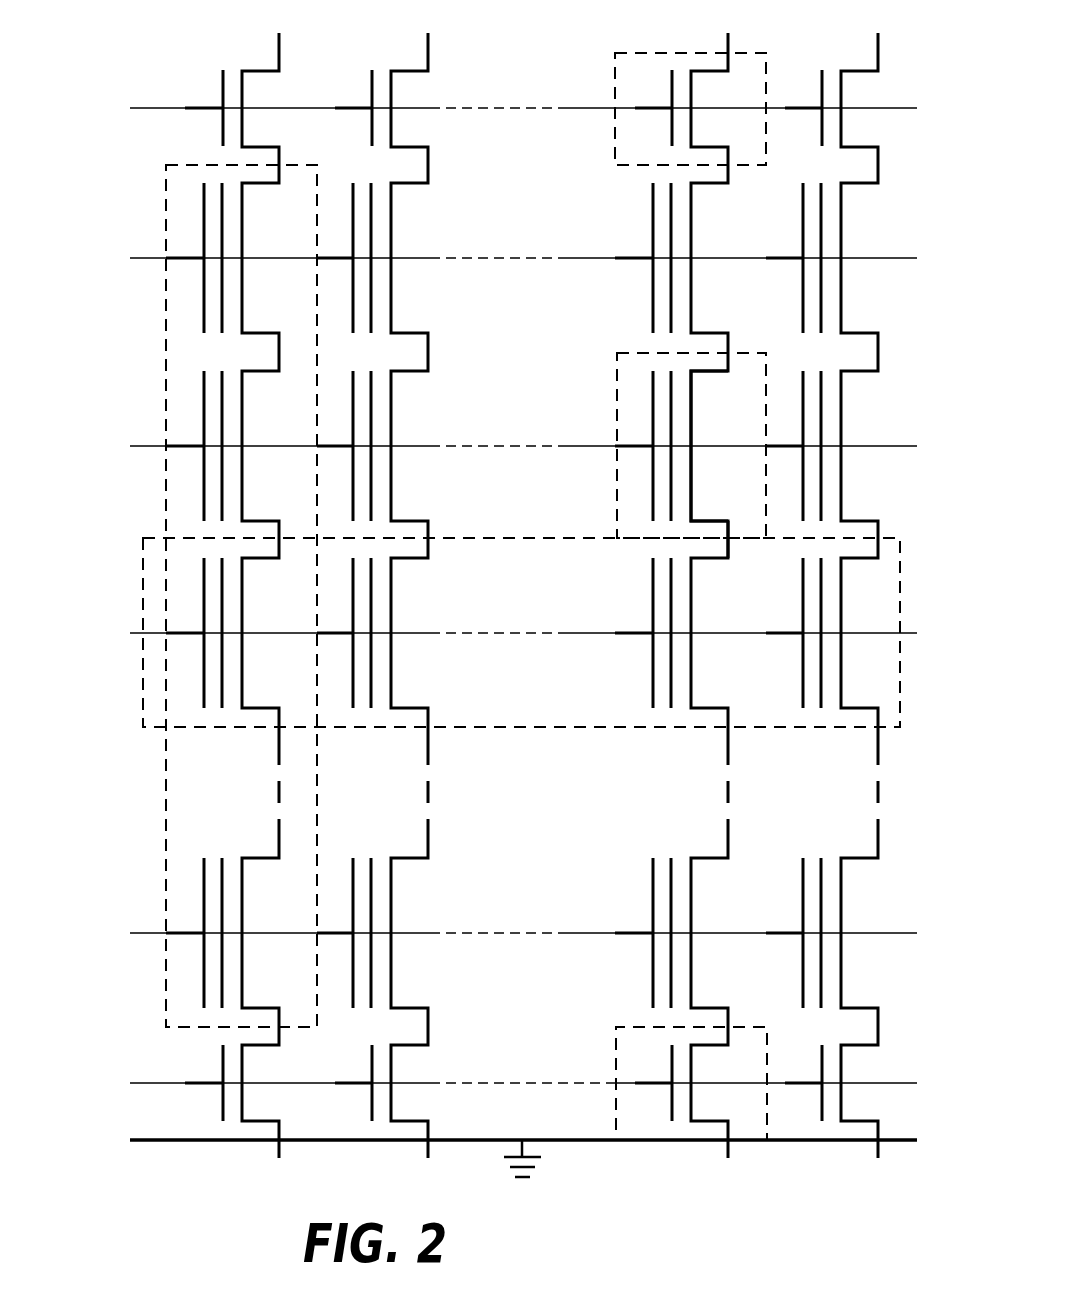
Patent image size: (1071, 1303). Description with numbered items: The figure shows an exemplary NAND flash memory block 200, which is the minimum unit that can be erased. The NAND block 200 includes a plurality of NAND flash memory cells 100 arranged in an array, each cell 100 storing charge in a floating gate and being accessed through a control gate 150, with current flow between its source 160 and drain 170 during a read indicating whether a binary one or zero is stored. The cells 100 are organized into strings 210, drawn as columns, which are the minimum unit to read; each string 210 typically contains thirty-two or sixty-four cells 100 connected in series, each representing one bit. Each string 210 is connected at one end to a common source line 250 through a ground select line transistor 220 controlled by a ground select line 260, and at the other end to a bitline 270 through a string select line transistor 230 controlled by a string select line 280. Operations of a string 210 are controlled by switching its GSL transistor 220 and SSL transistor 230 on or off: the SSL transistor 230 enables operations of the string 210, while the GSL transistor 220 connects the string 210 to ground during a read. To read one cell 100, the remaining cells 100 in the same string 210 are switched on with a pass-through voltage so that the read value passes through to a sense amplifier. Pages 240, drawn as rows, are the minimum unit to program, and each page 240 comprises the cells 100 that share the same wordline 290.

The NAND flash memory block 200 is at (134, 56).
The bitline 270 is at (280, 40).
The string select line 280 is at (537, 108).
The wordline 290 is at (537, 258).
The string select line transistor 230 is at (614, 100).
The string 210 is at (165, 212).
The page 240 is at (518, 538).
The NAND flash memory cell 100 is at (745, 352).
The control gate 150 is at (628, 445).
The drain 170 is at (733, 363).
The source 160 is at (728, 536).
The ground select line 260 is at (443, 1083).
The ground select line transistor 220 is at (615, 1093).
The common source line 250 is at (455, 1138).